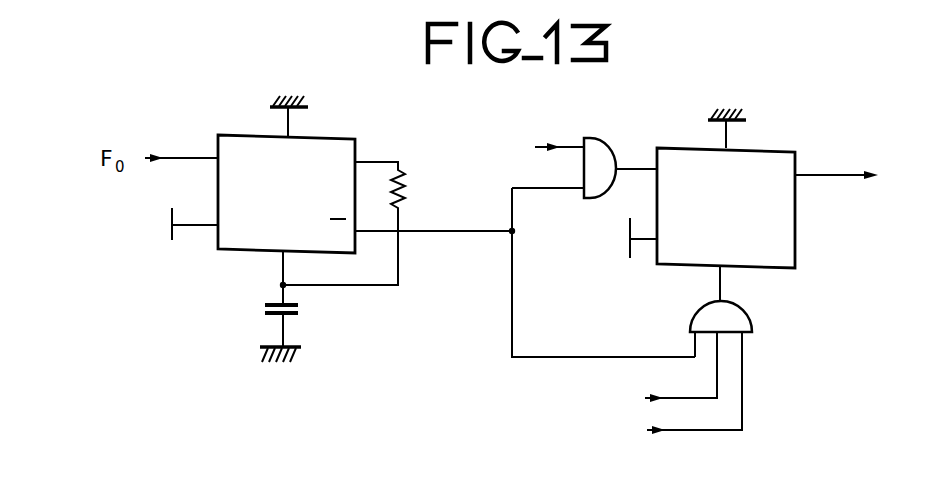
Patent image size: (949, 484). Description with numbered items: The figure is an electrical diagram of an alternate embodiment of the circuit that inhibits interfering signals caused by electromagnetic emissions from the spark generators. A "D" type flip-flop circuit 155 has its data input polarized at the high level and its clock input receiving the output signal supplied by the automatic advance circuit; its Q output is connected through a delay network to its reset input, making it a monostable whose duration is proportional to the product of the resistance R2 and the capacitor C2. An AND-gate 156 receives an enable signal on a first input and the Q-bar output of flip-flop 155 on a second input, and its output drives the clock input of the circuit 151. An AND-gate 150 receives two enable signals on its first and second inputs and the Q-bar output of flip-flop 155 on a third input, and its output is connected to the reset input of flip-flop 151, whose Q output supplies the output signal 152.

The "D" type flip-flop circuit 155 is at (238, 135).
The circuit 151 is at (679, 148).
The AND-gate 156 is at (606, 200).
The AND-gate 150 is at (690, 319).
The output signal 152 is at (863, 178).
The resistance R2 is at (410, 182).
The capacitor C2 is at (281, 285).